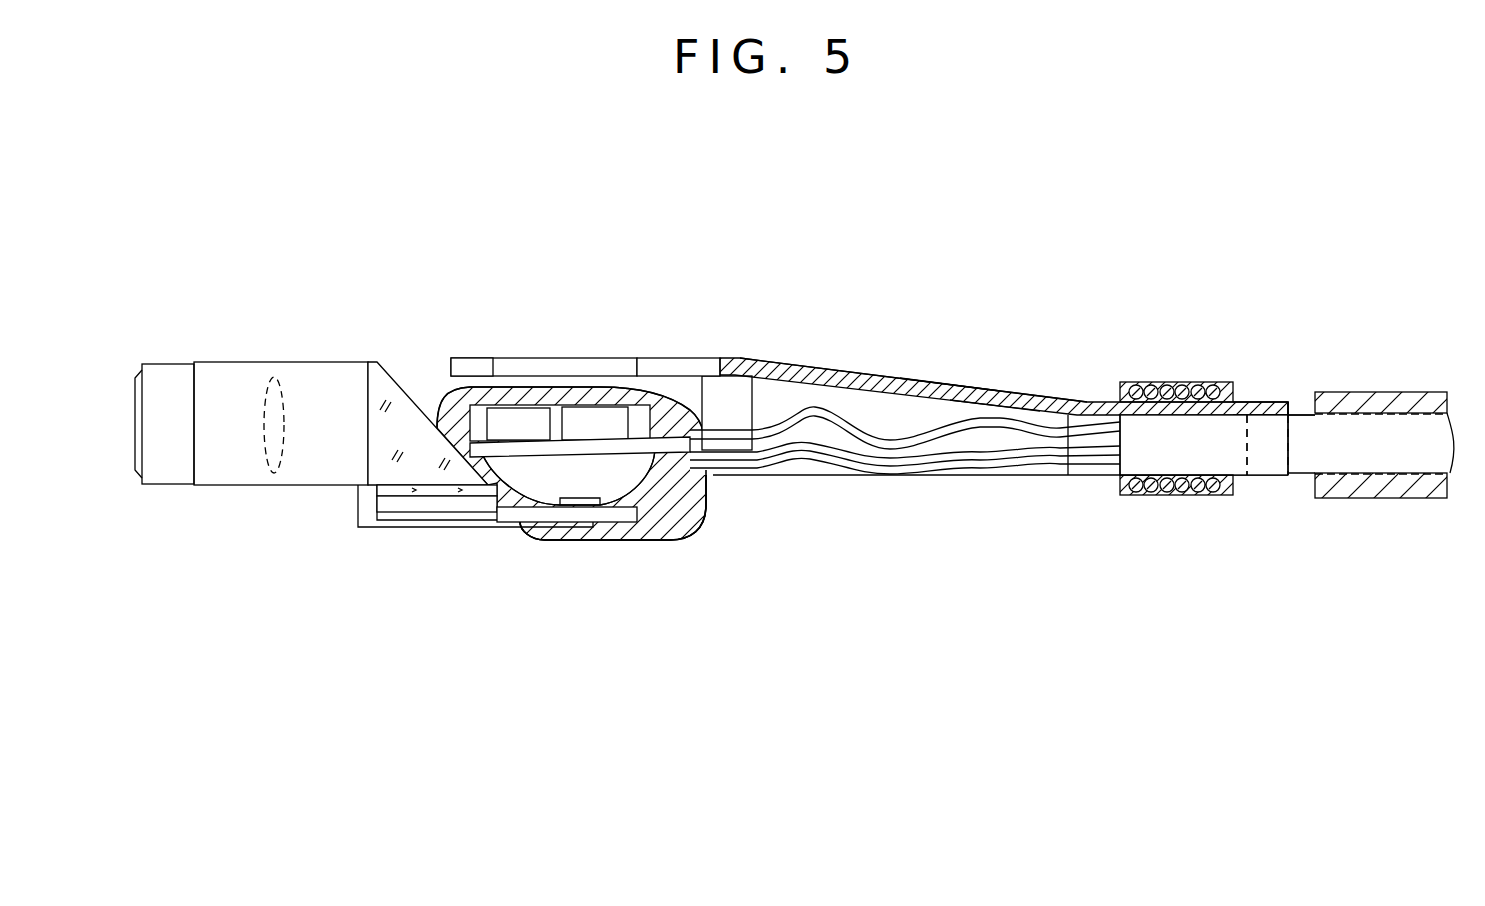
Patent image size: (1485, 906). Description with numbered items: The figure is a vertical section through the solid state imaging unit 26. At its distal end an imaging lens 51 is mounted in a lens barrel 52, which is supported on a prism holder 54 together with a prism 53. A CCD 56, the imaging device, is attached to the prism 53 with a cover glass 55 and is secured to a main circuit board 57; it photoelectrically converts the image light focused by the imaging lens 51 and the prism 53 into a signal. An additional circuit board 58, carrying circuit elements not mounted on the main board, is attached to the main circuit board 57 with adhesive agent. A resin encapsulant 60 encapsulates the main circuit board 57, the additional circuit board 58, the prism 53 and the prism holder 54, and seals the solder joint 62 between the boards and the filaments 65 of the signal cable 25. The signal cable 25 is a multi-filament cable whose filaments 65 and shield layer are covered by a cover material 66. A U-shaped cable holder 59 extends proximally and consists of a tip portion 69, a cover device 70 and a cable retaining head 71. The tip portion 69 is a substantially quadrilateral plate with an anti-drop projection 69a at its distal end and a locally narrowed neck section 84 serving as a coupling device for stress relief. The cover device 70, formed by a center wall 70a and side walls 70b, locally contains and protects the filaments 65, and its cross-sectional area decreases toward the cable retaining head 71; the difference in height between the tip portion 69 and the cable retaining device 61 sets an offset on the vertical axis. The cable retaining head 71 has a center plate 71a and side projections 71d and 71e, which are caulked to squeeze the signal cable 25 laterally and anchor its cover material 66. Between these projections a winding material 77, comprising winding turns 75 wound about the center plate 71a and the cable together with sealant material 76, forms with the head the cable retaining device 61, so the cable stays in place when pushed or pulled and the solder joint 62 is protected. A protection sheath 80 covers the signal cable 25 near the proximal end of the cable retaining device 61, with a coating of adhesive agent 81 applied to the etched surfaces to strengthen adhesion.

The signal cable 25 is at (1300, 410).
The solid state imaging unit 26 is at (604, 575).
The imaging lens 51 is at (260, 362).
The lens barrel 52 is at (230, 366).
The prism 53 is at (390, 370).
The prism holder 54 is at (365, 528).
The cover glass 55 is at (405, 513).
The CCD 56 is at (445, 507).
The main circuit board 57 is at (553, 516).
The additional circuit board 58 is at (668, 443).
The cable holder 59 is at (829, 363).
The encapsulant 60 is at (682, 522).
The cable retaining device 61 is at (1014, 444).
The solder joint 62 is at (710, 510).
The filaments 65 is at (800, 410).
The cover material 66 is at (1297, 480).
The tip portion 69 is at (528, 370).
The anti-drop projection 69a is at (460, 368).
The cover device 70 is at (900, 372).
The center wall 70a is at (962, 393).
The side walls 70b is at (1007, 410).
The cable retaining head 71 is at (1102, 478).
The center plate 71a is at (1245, 405).
The first pair of side projections 71d is at (1087, 480).
The second pair of side projections 71e is at (1262, 445).
The winding turns 75 is at (1165, 395).
The sealant material 76 is at (1128, 384).
The winding material 77 is at (1133, 492).
The protection sheath 80 is at (1408, 410).
The adhesive agent 81 is at (1352, 408).
The neck section 84 is at (650, 370).